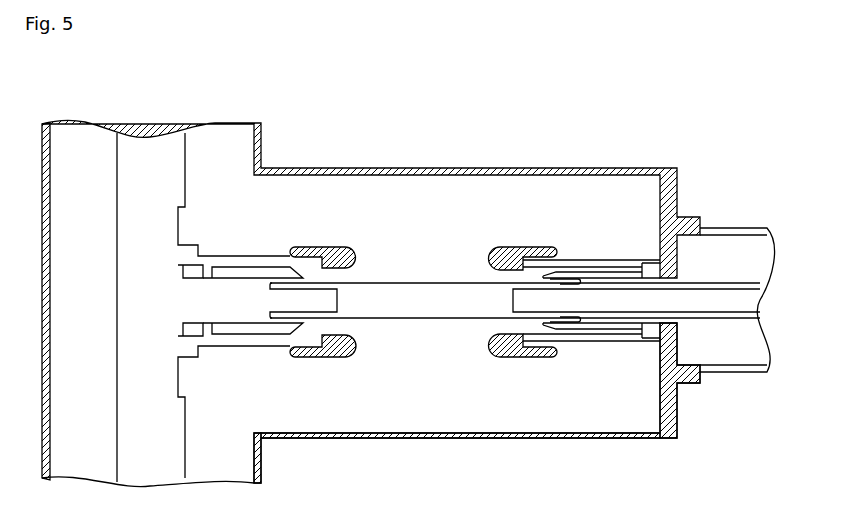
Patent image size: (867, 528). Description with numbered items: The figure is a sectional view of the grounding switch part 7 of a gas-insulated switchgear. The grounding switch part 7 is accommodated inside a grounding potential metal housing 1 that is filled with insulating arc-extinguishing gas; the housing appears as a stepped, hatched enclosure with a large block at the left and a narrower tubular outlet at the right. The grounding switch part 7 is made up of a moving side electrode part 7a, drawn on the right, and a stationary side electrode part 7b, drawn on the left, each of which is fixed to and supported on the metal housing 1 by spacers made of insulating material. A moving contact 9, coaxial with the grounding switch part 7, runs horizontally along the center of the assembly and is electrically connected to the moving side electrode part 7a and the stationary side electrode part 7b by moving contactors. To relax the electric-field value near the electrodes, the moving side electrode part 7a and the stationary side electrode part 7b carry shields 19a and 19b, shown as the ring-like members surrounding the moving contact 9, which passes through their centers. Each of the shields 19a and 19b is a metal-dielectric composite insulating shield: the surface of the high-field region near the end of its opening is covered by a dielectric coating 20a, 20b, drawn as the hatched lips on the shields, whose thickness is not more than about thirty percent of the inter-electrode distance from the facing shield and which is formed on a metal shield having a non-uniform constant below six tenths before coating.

The metal housing 1 is at (492, 438).
The grounding switch part 7 is at (422, 332).
The moving side electrode part 7a is at (605, 340).
The stationary side electrode part 7b is at (252, 347).
The moving contact 9 is at (407, 300).
The shield 19a is at (565, 262).
The shield 19b is at (268, 263).
The dielectric coating 20a is at (507, 248).
The dielectric coating 20b is at (350, 247).